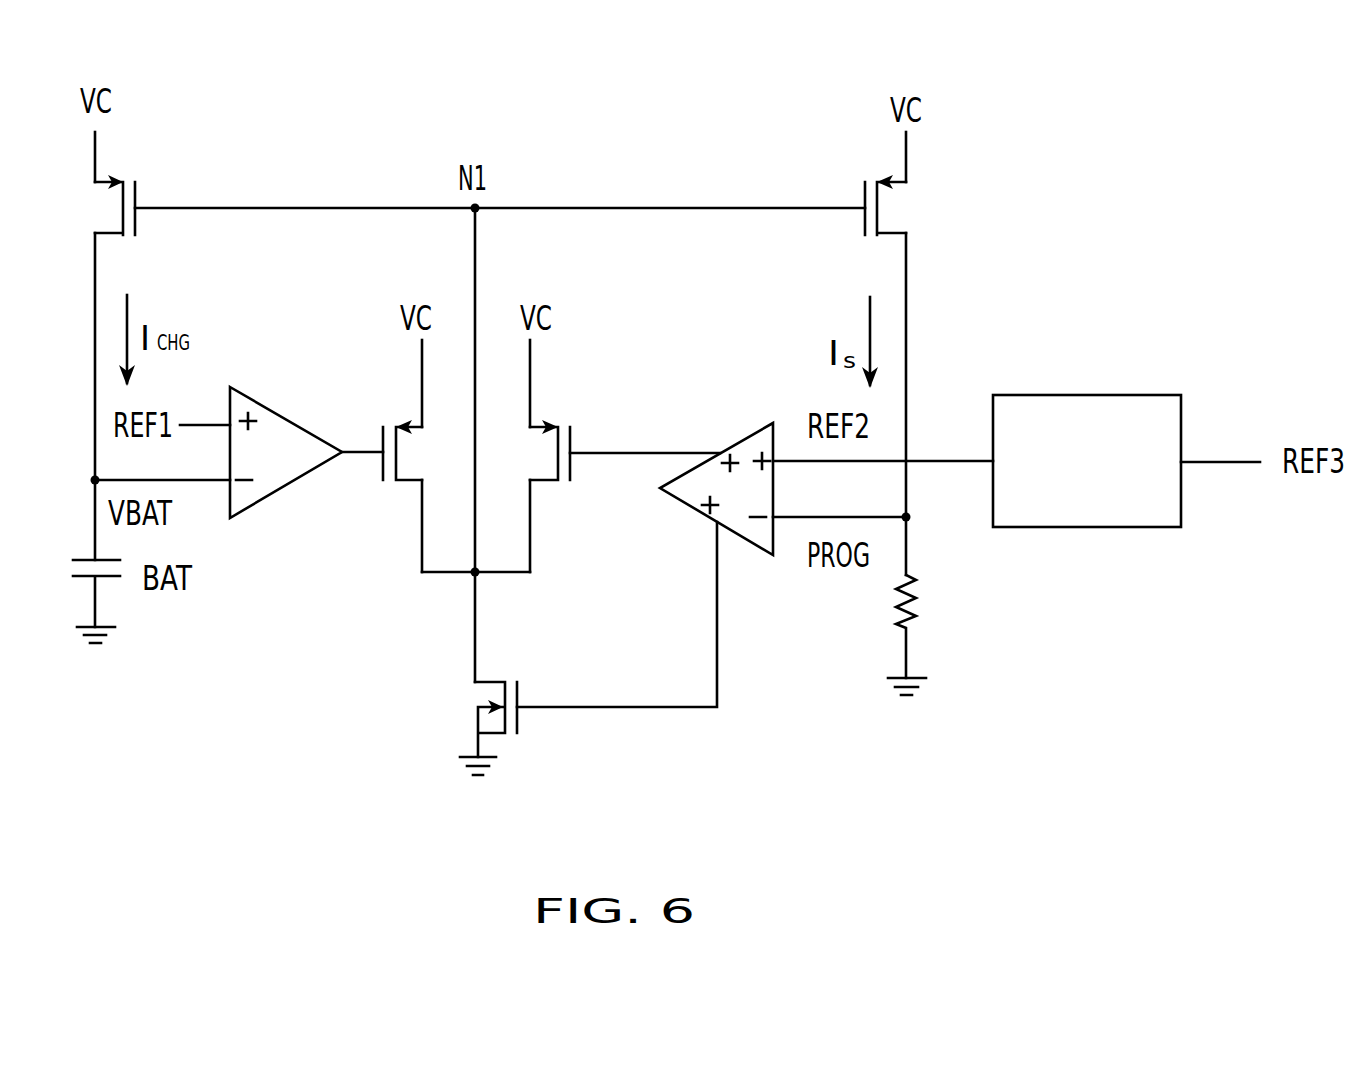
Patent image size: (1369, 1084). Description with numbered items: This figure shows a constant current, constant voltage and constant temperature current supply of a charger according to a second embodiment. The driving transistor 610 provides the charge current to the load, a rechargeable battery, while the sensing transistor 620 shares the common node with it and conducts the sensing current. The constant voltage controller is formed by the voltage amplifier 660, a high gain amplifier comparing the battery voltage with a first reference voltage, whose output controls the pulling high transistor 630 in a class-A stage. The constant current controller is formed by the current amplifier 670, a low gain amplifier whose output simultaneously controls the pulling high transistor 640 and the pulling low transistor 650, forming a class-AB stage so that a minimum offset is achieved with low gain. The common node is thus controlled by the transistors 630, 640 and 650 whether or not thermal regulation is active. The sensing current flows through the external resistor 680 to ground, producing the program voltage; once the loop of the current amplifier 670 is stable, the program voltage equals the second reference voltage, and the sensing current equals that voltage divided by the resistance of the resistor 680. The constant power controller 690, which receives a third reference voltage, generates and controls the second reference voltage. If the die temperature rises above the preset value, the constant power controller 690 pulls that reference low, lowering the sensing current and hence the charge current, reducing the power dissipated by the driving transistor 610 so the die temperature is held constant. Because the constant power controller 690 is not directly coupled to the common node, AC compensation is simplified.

The driving transistor 610 is at (164, 199).
The sensing transistor 620 is at (860, 194).
The pulling high transistor 630 is at (388, 425).
The pulling high transistor 640 is at (559, 425).
The pulling low transistor 650 is at (460, 728).
The voltage amplifier 660 is at (288, 484).
The current amplifier 670 is at (692, 508).
The resistor 680 is at (885, 635).
The constant power controller 690 is at (1050, 395).